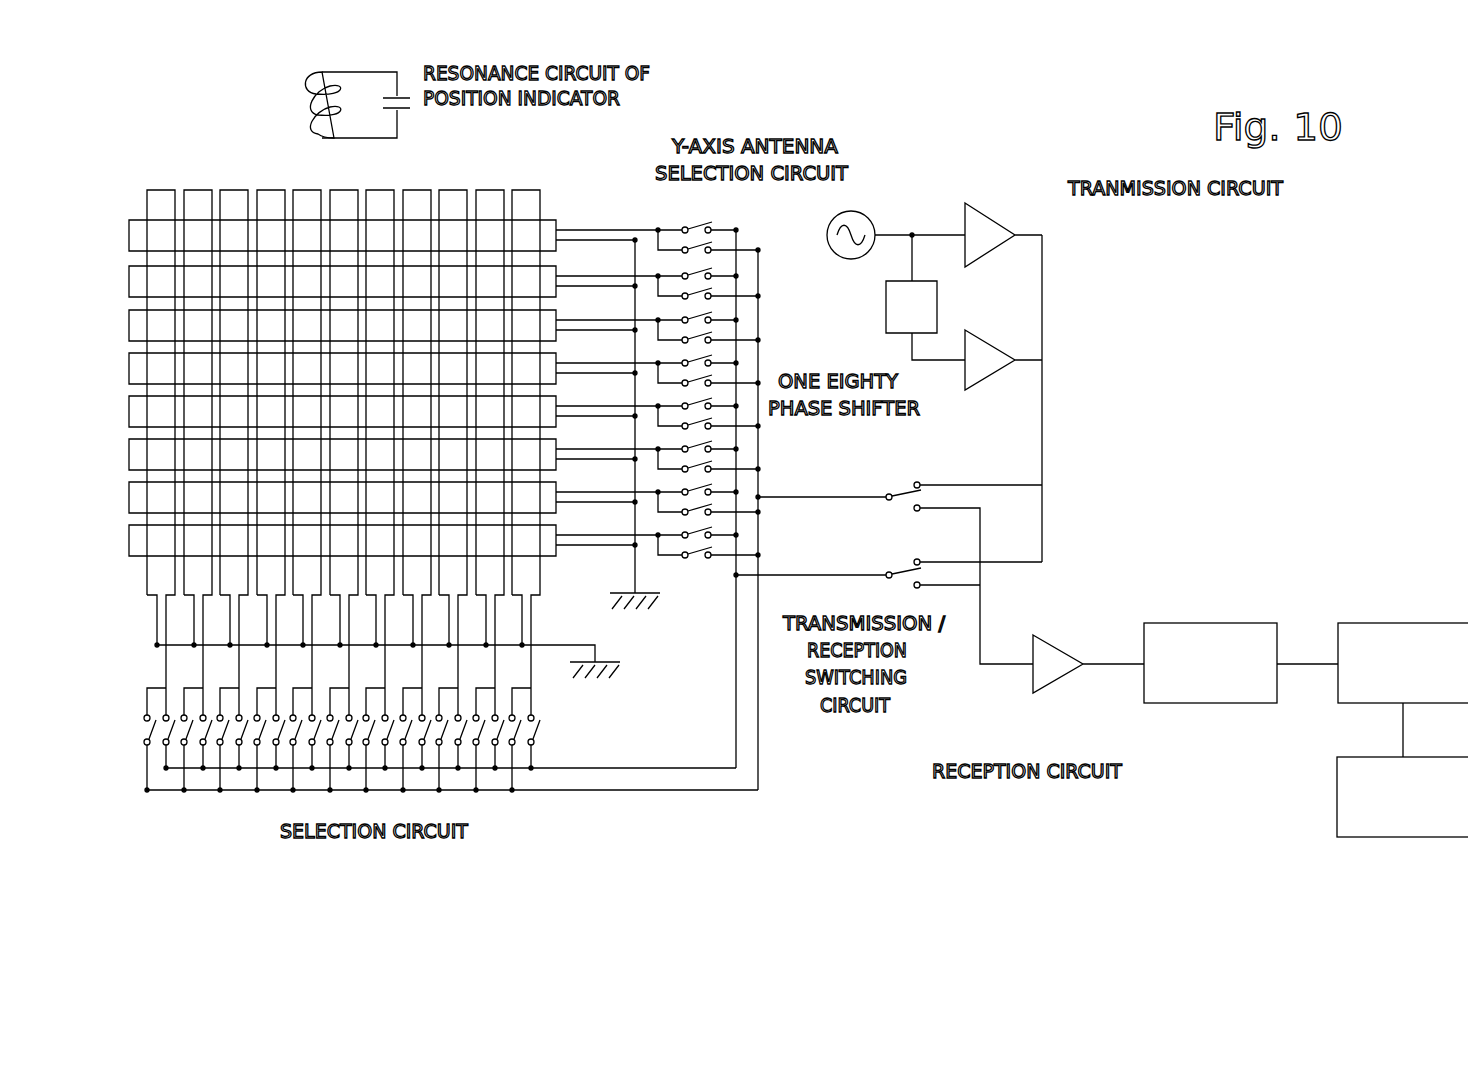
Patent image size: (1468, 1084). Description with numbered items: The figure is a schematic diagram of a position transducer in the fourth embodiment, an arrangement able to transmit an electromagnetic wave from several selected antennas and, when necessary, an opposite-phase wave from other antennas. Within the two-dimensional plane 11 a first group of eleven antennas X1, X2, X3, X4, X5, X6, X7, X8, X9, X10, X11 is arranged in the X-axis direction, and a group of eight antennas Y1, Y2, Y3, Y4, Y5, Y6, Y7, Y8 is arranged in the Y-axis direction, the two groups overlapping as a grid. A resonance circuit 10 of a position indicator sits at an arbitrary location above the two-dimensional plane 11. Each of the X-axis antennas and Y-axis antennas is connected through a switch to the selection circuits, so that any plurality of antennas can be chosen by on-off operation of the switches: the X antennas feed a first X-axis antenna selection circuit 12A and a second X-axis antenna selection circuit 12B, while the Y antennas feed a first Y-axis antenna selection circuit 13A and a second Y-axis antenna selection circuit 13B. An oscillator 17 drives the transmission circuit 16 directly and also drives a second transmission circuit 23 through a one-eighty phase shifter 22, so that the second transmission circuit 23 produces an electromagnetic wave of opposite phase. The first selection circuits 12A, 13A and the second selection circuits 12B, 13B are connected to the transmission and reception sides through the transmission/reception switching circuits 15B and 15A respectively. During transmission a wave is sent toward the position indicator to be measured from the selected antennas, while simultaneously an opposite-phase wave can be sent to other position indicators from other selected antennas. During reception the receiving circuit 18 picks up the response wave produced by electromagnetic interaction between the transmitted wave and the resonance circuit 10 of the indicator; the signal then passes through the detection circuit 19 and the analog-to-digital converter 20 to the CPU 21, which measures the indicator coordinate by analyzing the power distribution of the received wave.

The resonance circuit of a position indicator 10 is at (397, 125).
The two-dimensional plane 11 is at (560, 170).
The first X-axis antenna selection circuit 12A is at (248, 795).
The second X-axis antenna selection circuit 12B is at (523, 793).
The first Y-axis antenna selection circuit 13A is at (743, 238).
The second Y-axis antenna selection circuit 13B is at (760, 276).
The transmission/reception switching circuit 15A is at (906, 490).
The transmission/reception switching circuit 15B is at (906, 570).
The transmission circuit 16 is at (985, 205).
The oscillator 17 is at (860, 212).
The receiving circuit 18 is at (1060, 685).
The detection circuit 19 is at (1185, 623).
The analog-to-digital converter 20 is at (1390, 623).
The CPU 21 is at (1396, 838).
The one-eighty phase shifter 22 is at (886, 300).
The second transmission circuit 23 is at (990, 342).
The antenna X1 is at (153, 598).
The antenna X2 is at (192, 613).
The antenna X3 is at (232, 595).
The antenna X4 is at (265, 613).
The antenna X5 is at (305, 595).
The antenna X6 is at (338, 613).
The antenna X7 is at (378, 595).
The antenna X8 is at (411, 613).
The antenna X9 is at (451, 595).
The antenna X10 is at (484, 613).
The antenna X11 is at (540, 598).
The antenna Y1 is at (556, 555).
The antenna Y2 is at (556, 507).
The antenna Y3 is at (556, 464).
The antenna Y4 is at (556, 421).
The antenna Y5 is at (556, 378).
The antenna Y6 is at (556, 335).
The antenna Y7 is at (556, 291).
The antenna Y8 is at (556, 222).